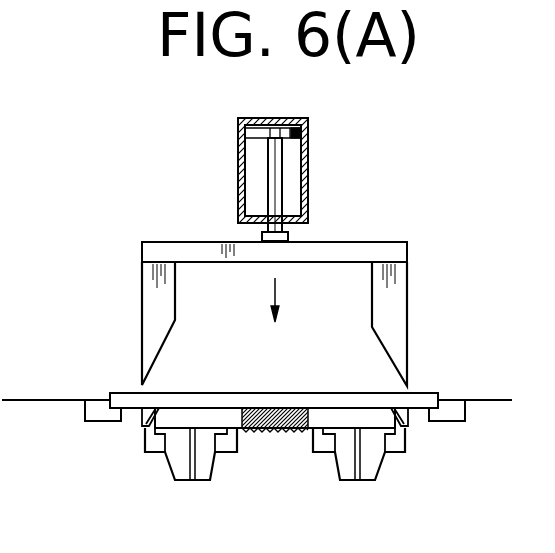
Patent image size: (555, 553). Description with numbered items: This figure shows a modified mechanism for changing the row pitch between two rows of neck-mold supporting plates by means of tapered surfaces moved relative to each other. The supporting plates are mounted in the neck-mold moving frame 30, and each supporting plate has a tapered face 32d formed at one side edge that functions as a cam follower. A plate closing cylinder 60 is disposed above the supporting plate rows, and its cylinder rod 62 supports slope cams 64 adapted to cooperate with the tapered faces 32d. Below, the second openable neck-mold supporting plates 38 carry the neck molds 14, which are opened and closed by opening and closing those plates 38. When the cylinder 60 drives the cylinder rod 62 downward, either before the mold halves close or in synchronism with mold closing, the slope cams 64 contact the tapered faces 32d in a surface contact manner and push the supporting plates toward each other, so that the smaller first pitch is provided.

The plate closing cylinder 60 is at (310, 157).
The cylinder rod 62 is at (285, 233).
The slope cams 64 is at (158, 358).
The neck-mold moving frame 30 is at (427, 393).
The tapered face 32d is at (144, 412).
The second openable neck-mold supporting plates 38 is at (307, 452).
The neck molds 14 is at (182, 467).